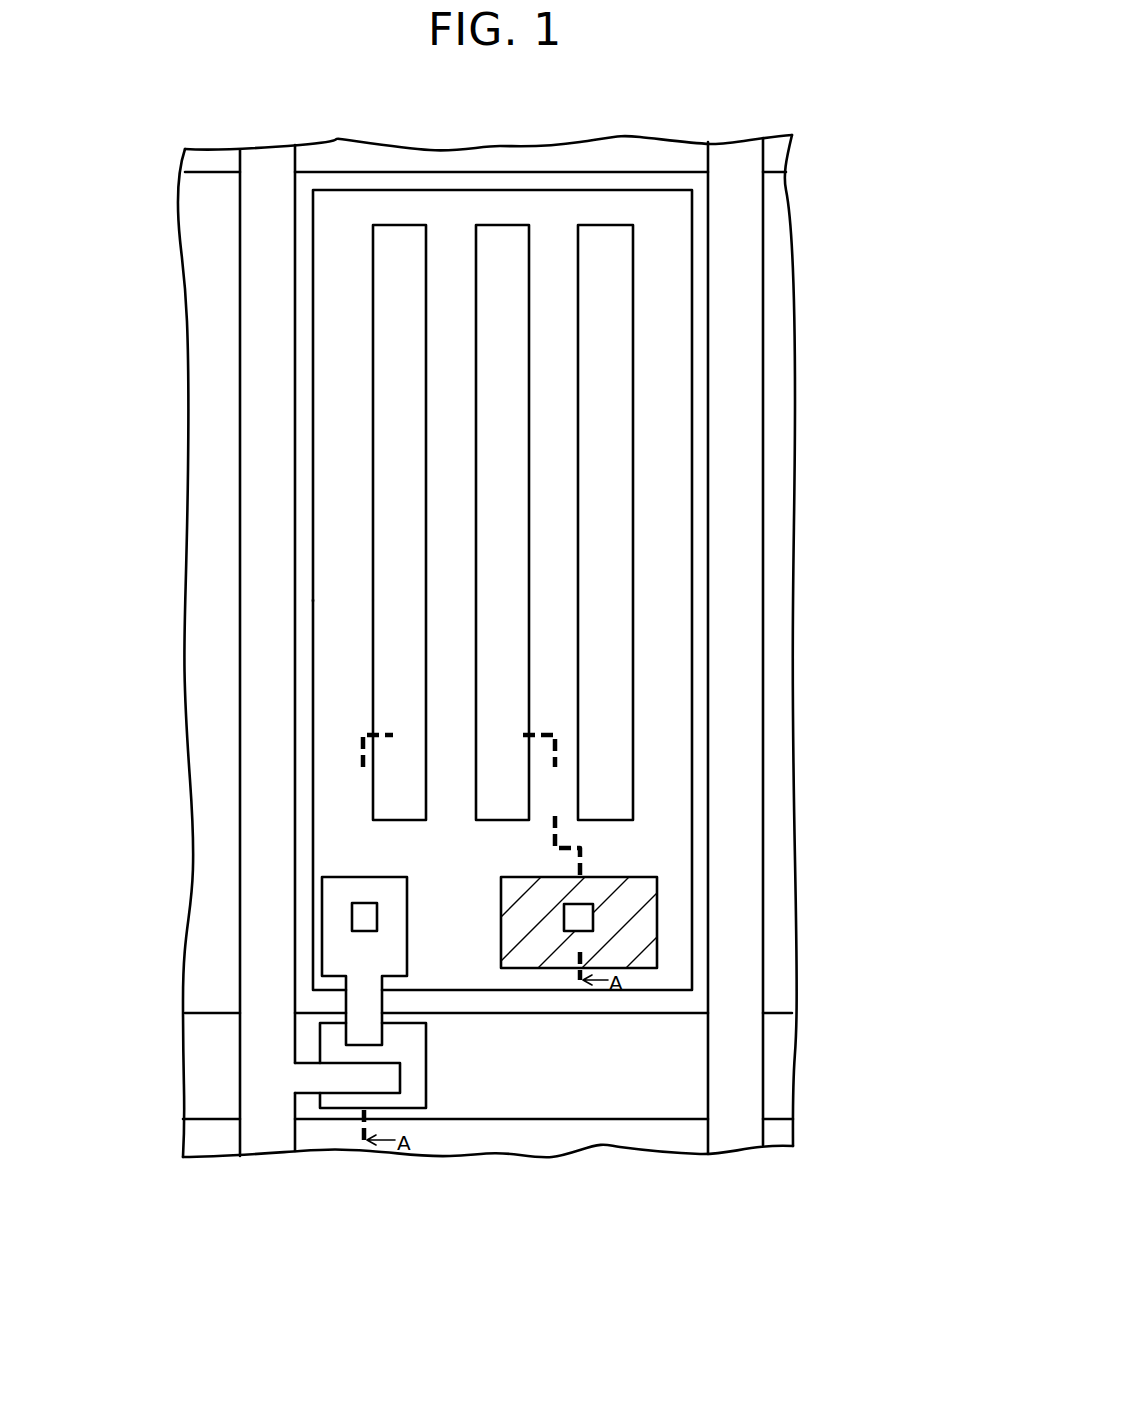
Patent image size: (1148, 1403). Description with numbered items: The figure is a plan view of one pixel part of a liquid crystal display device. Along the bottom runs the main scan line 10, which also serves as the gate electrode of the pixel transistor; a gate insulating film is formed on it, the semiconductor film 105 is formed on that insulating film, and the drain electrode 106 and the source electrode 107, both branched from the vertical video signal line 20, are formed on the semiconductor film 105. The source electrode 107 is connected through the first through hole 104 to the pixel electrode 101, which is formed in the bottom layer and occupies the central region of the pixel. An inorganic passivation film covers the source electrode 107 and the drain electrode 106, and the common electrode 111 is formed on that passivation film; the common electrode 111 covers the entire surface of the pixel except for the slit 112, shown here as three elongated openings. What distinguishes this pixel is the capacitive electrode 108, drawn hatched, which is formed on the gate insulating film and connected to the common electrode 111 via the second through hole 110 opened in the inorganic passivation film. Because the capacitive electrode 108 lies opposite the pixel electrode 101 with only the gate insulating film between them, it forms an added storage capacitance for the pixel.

The main scan line 10 is at (587, 1097).
The video signal line 20 is at (275, 858).
The pixel electrode 101 is at (335, 803).
The first through hole 104 is at (362, 916).
The semiconductor film 105 is at (415, 1080).
The drain electrode 106 is at (343, 1083).
The source electrode 107 is at (338, 958).
The capacitive electrode 108 is at (637, 893).
The second through hole 110 is at (590, 922).
The common electrode 111 is at (305, 500).
The slit 112 is at (400, 611).